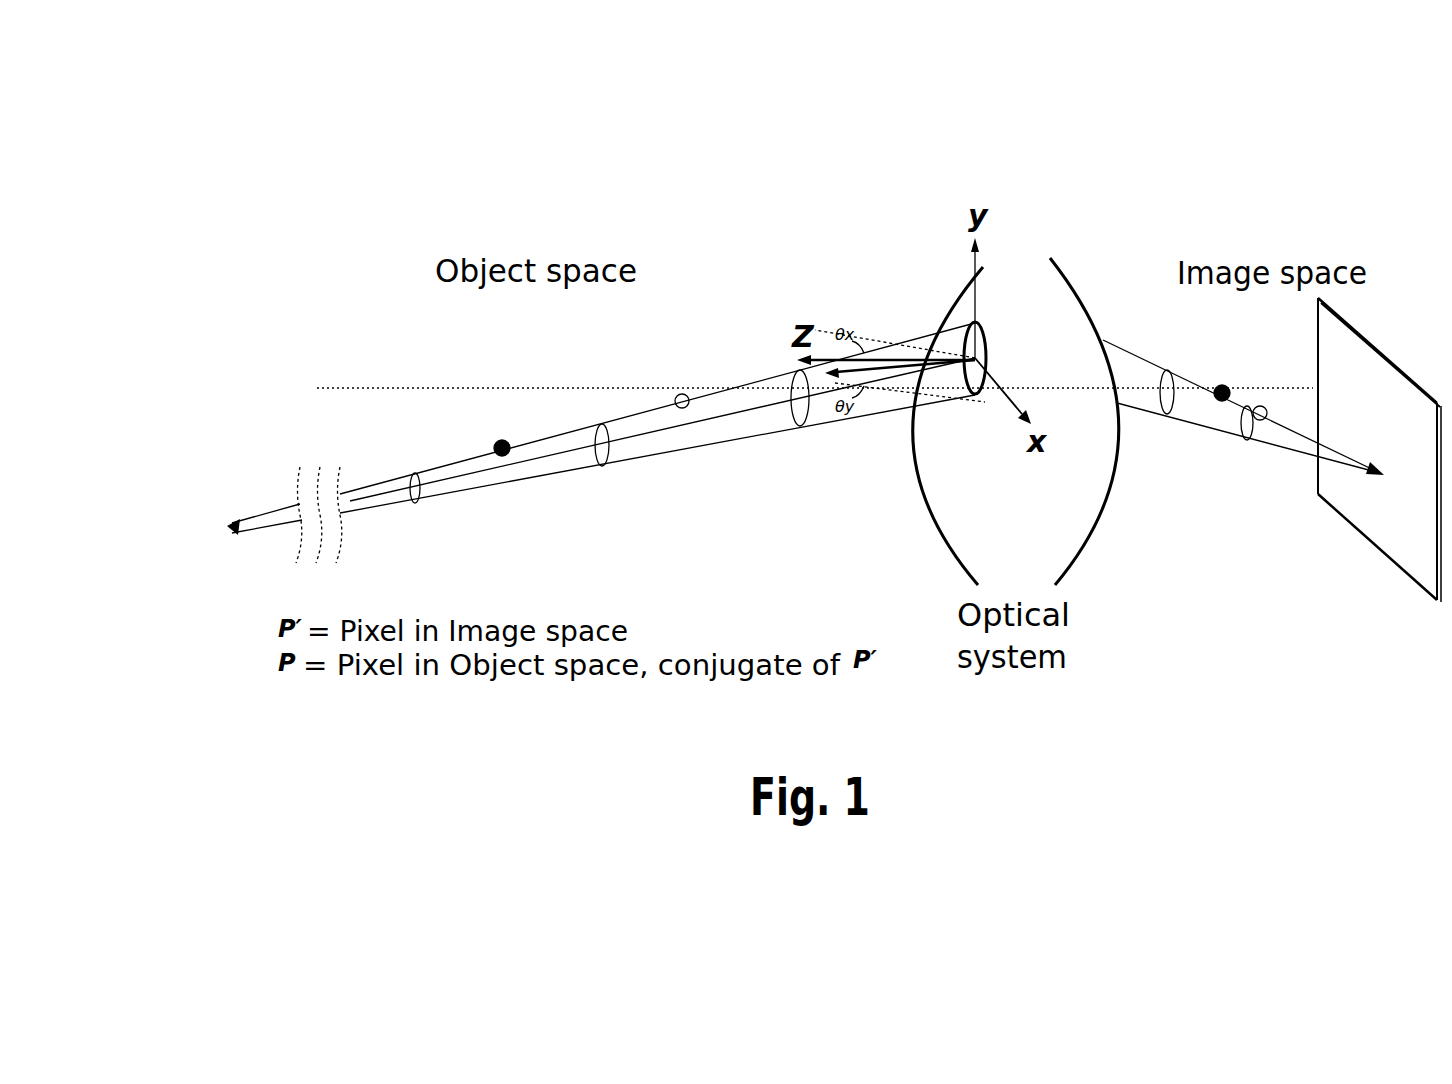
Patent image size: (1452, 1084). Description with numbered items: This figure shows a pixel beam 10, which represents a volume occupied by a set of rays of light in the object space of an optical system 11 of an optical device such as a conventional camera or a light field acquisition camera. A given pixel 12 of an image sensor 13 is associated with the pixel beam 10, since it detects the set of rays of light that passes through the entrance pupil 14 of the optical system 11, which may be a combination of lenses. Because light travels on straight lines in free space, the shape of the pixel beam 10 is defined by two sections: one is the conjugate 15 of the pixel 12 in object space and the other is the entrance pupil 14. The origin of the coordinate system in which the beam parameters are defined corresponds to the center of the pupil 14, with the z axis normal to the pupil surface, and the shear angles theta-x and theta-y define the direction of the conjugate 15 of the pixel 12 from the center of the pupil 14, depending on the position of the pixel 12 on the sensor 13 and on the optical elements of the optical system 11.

The pixel beam 10 is at (727, 387).
The optical system 11 is at (952, 465).
The pixel 12 is at (1356, 478).
The image sensor 13 is at (1407, 560).
The entrance pupil 14 is at (988, 358).
The conjugate of the pixel 15 is at (224, 530).